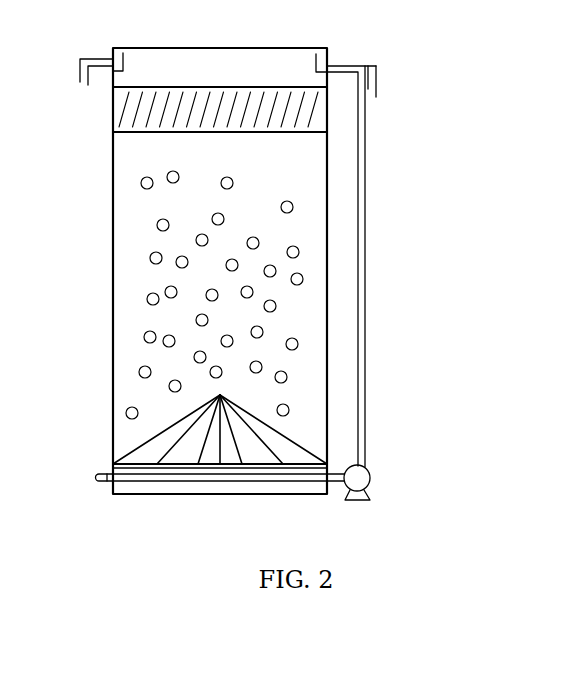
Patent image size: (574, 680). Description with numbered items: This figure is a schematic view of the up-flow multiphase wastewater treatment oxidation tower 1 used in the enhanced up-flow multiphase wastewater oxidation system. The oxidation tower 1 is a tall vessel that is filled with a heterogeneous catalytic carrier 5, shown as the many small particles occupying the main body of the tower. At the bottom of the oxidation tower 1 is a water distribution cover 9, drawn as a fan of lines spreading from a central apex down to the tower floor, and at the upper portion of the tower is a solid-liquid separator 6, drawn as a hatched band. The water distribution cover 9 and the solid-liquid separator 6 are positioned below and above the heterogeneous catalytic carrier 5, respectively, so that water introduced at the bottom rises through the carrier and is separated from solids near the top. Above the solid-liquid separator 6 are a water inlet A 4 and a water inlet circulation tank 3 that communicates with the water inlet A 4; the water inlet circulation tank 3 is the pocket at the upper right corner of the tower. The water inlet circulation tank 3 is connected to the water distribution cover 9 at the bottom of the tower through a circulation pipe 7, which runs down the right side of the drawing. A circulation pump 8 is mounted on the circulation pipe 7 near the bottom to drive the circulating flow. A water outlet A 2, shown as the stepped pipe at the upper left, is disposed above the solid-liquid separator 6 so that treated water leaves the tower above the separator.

The up-flow multiphase wastewater treatment oxidation tower 1 is at (179, 271).
The water outlet A 2 is at (88, 85).
The water inlet circulation tank 3 is at (317, 61).
The water inlet A 4 is at (376, 65).
The heterogeneous catalytic carrier 5 is at (229, 182).
The solid-liquid separator 6 is at (207, 92).
The circulation pipe 7 is at (365, 235).
The circulation pump 8 is at (370, 476).
The water distribution cover 9 is at (279, 408).